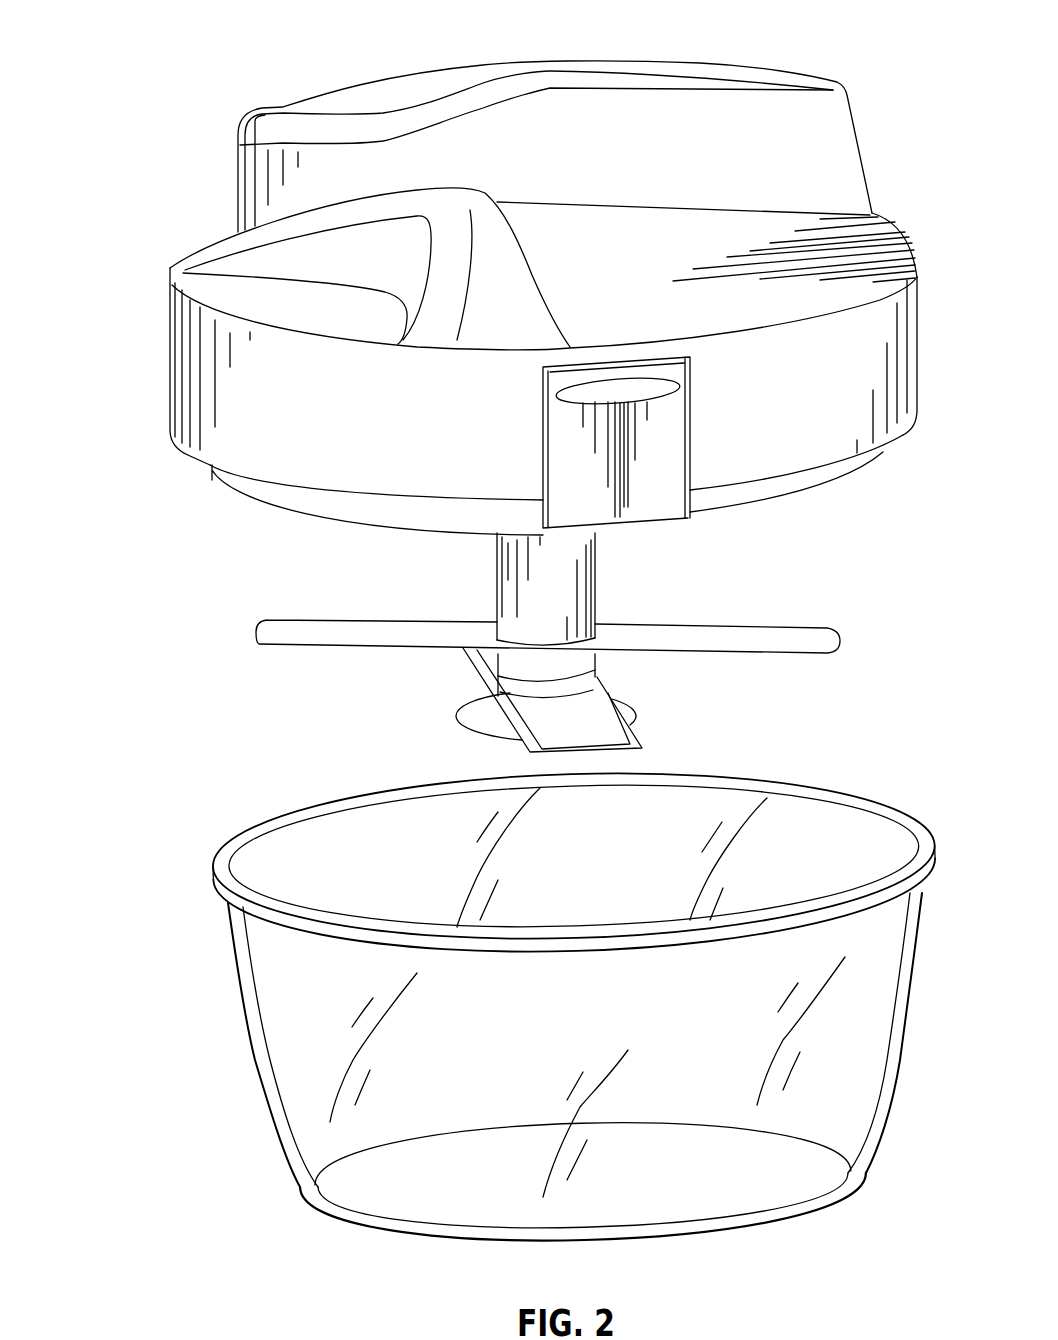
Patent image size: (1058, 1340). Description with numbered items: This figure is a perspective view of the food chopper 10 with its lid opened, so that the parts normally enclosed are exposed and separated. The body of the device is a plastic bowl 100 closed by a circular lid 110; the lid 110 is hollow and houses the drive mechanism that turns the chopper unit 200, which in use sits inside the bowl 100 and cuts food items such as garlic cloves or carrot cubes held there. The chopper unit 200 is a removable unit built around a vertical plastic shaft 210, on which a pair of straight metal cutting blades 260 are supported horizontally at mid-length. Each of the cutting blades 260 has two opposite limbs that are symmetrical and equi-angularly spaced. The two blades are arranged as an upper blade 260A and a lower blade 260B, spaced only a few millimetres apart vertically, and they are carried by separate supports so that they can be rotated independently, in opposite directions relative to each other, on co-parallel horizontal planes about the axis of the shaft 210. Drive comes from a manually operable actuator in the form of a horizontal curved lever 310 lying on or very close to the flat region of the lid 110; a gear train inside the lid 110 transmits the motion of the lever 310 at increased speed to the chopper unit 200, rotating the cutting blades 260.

The seat-shaped lid assembly 10 is at (180, 150).
The bowl 100 is at (209, 1031).
The lid 110 is at (212, 410).
The chopper unit 200 is at (381, 680).
The shaft 210 is at (530, 592).
The cutting blades 260 is at (486, 686).
The upper blade 260A is at (258, 629).
The lower blade 260B is at (610, 738).
The lever 310 is at (433, 78).